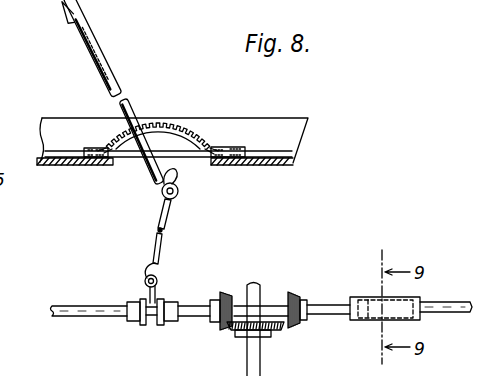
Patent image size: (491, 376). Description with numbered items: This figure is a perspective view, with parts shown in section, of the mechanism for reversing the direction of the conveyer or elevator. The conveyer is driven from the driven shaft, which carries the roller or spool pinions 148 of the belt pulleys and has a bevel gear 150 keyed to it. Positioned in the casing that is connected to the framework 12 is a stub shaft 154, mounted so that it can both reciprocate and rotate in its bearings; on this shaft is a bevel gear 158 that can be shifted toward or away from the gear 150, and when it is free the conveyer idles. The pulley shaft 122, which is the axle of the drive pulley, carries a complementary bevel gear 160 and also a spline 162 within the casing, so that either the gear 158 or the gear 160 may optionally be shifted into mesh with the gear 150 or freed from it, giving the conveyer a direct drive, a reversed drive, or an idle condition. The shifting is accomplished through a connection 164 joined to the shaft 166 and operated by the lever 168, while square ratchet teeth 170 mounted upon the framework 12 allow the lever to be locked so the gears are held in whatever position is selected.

The framework 12 is at (304, 134).
The pulley shaft 122 is at (447, 314).
The roller or spool pinions 148 is at (249, 366).
The bevel gear 150 is at (278, 334).
The stub shaft 154 is at (105, 317).
The bevel gear 158 is at (223, 292).
The complementary bevel gear 160 is at (297, 292).
The spline 162 is at (360, 322).
The connection 164 is at (173, 304).
The shaft 166 is at (168, 215).
The lever 168 is at (115, 78).
The square ratchet teeth 170 is at (168, 122).